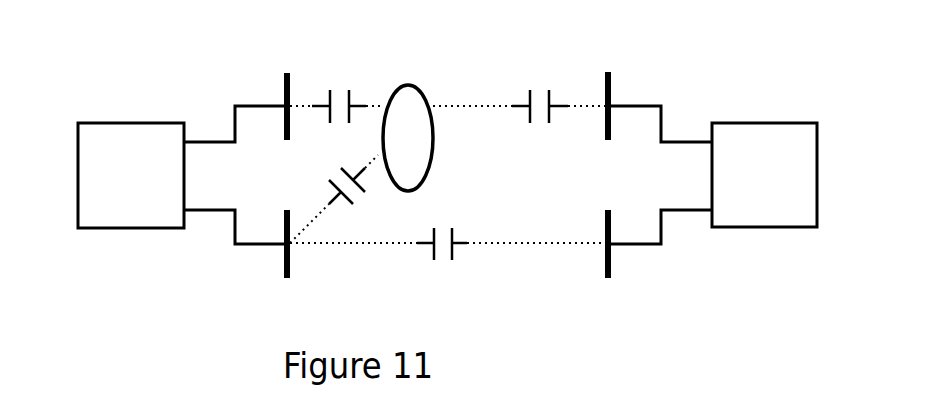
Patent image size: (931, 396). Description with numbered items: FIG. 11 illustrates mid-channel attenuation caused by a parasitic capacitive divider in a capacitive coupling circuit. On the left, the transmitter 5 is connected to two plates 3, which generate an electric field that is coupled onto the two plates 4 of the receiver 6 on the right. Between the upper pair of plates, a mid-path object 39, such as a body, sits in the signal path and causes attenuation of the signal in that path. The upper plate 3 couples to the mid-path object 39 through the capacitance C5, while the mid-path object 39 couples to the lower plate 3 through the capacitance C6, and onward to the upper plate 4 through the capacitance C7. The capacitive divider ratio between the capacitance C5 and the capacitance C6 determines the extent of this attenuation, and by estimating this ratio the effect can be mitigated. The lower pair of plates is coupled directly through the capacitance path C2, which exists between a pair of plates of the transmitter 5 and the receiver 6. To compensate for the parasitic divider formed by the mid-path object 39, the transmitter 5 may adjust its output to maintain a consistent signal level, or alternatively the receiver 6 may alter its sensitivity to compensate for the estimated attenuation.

The plates of the transmitter 3 is at (285, 73).
The plates of the receiver 4 is at (608, 70).
The transmitter 5 is at (125, 120).
The receiver 6 is at (762, 122).
The mid-path object 39 is at (410, 86).
The capacitance C5 is at (342, 88).
The capacitance C6 is at (326, 185).
The capacitance C7 is at (540, 88).
The capacitance path C2 is at (442, 263).